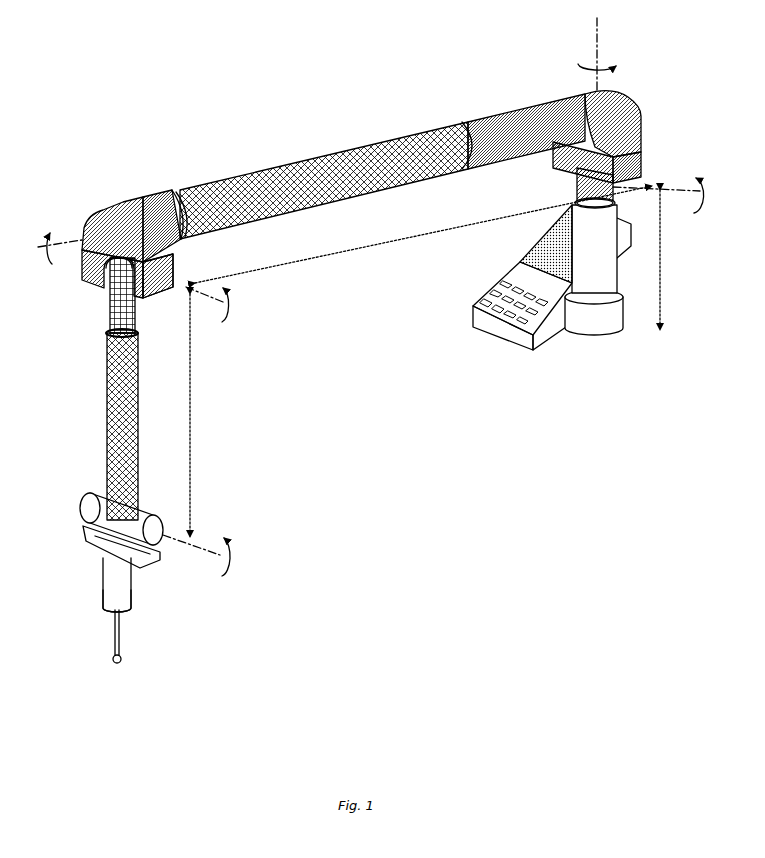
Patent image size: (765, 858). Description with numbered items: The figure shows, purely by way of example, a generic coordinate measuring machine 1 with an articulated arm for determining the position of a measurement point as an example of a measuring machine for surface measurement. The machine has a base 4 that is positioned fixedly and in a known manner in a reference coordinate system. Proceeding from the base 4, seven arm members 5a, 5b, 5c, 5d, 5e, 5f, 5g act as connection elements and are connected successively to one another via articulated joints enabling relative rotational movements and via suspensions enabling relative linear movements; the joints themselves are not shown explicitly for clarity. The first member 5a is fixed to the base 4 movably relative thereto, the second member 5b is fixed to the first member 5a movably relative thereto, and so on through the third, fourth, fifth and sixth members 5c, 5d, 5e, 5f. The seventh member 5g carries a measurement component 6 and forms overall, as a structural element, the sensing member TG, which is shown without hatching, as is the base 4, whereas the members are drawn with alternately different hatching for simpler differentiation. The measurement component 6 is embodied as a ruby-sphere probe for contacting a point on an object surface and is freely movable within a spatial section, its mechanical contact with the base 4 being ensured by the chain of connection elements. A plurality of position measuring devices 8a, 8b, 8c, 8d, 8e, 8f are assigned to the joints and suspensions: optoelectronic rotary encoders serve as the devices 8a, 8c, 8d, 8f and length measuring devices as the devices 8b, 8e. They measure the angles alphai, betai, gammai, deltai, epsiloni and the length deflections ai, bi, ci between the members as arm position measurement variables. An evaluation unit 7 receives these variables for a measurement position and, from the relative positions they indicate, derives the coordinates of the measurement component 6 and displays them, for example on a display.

The coordinate measuring machine 1 is at (248, 86).
The base 4 is at (597, 316).
The first arm member 5a is at (583, 232).
The second arm member 5b is at (528, 118).
The third arm member 5c is at (350, 155).
The fourth arm member 5d is at (123, 220).
The fifth arm member 5e is at (123, 305).
The sixth arm member 5f is at (107, 432).
The seventh arm member 5g is at (117, 567).
The measurement component 6 is at (118, 664).
The evaluation unit 7 is at (502, 327).
The position measuring device 8a is at (557, 160).
The position measuring device 8b is at (453, 127).
The position measuring device 8c is at (163, 197).
The position measuring device 8d is at (173, 258).
The position measuring device 8e is at (138, 338).
The position measuring device 8f is at (163, 518).
The sensing member TG is at (120, 600).
The length deflection a ai is at (661, 262).
The length deflection b bi is at (343, 253).
The length deflection c ci is at (186, 387).
The angle alpha alphai is at (658, 178).
The angle beta betai is at (585, 54).
The angle gamma gammai is at (57, 262).
The angle delta deltai is at (223, 304).
The angle epsilon epsiloni is at (215, 555).